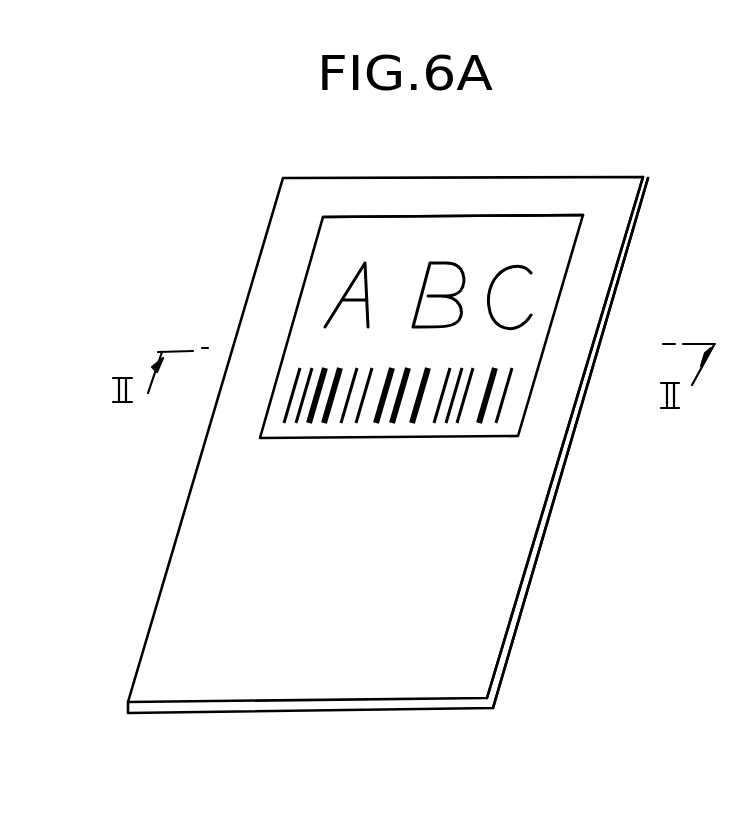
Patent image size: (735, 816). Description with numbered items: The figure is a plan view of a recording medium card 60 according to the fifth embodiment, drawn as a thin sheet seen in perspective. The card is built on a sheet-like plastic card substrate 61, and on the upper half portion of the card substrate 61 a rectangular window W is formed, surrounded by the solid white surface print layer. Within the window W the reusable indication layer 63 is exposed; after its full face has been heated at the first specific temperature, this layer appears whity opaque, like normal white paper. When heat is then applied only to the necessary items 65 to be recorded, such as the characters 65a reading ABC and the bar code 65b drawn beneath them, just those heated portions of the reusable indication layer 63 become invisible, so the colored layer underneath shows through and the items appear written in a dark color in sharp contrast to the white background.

The recording medium card 60 is at (583, 180).
The card substrate 61 is at (605, 230).
The reusable indication layer 63 is at (338, 240).
The window W is at (420, 217).
The necessary items 65 is at (49, 427).
The characters 65a is at (320, 318).
The bar code 65b is at (273, 418).